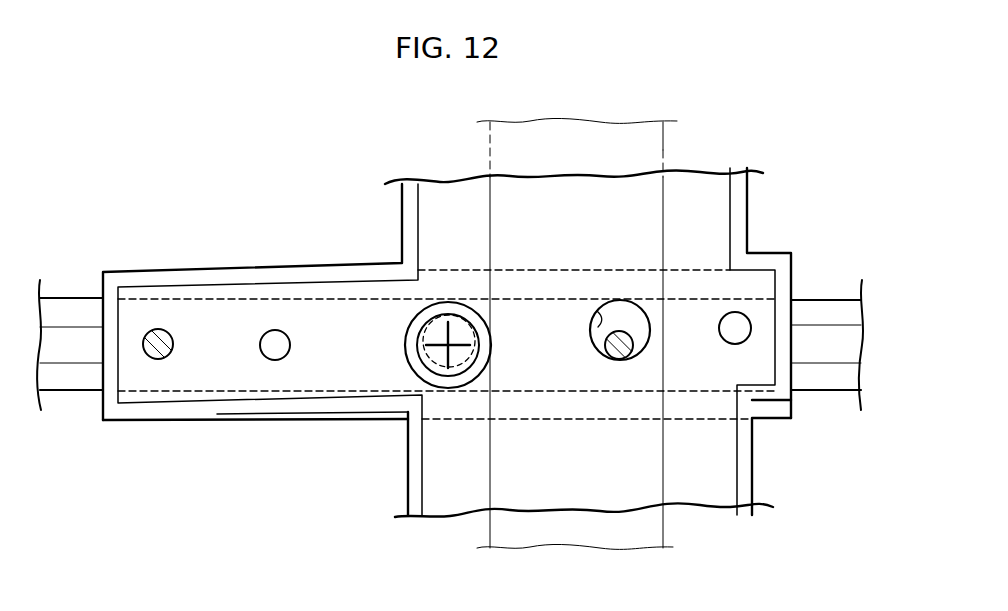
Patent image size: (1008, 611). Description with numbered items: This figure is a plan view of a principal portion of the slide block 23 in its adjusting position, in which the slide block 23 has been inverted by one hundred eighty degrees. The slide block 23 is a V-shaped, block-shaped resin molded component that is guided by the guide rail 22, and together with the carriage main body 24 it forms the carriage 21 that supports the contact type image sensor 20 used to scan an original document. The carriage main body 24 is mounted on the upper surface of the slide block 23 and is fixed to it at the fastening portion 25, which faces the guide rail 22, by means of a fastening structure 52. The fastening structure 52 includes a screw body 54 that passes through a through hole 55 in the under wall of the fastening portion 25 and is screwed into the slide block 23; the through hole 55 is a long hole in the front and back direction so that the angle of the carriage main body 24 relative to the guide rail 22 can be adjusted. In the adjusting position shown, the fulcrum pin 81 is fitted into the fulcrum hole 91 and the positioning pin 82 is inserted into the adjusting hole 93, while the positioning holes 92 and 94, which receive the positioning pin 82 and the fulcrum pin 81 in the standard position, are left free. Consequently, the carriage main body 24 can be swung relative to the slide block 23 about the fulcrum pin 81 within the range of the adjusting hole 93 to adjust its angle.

The contact type image sensor 20 is at (663, 149).
The carriage 21 is at (447, 342).
The guide rail 22 is at (822, 377).
The slide block 23 is at (448, 420).
The carriage main body 24 is at (400, 480).
The fastening portion 25 is at (253, 408).
The fastening structure 52 is at (435, 334).
The screw body 54 is at (412, 345).
The through hole 55 is at (458, 318).
The fulcrum pin 81 is at (179, 295).
The positioning pin 82 is at (607, 354).
The fulcrum hole 91 is at (165, 335).
The positioning hole 92 is at (274, 335).
The adjusting hole 93 is at (591, 329).
The positioning hole 94 is at (733, 328).